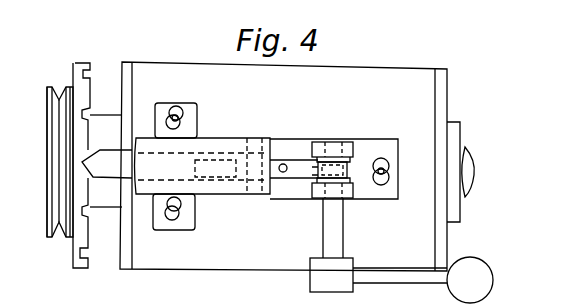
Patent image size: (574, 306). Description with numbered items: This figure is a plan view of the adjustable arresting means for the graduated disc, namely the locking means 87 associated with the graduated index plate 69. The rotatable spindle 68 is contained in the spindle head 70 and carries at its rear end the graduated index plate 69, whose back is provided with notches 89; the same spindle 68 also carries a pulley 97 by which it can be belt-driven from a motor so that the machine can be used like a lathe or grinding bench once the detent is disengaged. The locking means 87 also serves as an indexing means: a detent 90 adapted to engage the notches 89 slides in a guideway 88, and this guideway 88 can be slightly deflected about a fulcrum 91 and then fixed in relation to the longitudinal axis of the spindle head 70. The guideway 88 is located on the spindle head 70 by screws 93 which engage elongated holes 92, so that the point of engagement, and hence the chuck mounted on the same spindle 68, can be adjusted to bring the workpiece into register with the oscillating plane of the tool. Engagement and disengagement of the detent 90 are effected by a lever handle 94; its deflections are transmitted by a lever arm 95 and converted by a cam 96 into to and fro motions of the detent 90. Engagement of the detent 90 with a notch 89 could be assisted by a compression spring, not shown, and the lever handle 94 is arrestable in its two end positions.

The spindle 68 is at (465, 146).
The graduated index plate 69 is at (80, 128).
The spindle head 70 is at (413, 73).
The locking means 87 is at (212, 98).
The guideway 88 is at (228, 188).
The notches 89 is at (75, 64).
The detent 90 is at (90, 163).
The fulcrum 91 is at (280, 162).
The elongated holes 92 is at (177, 108).
The screws 93 is at (178, 118).
The lever handle 94 is at (484, 278).
The lever arm 95 is at (322, 233).
The cam 96 is at (346, 170).
The pulley 97 is at (50, 181).